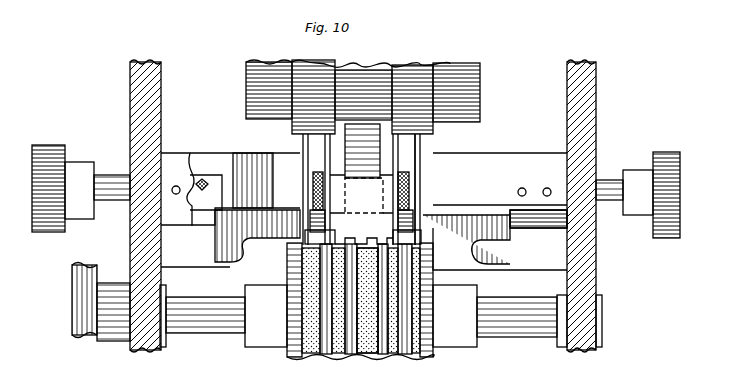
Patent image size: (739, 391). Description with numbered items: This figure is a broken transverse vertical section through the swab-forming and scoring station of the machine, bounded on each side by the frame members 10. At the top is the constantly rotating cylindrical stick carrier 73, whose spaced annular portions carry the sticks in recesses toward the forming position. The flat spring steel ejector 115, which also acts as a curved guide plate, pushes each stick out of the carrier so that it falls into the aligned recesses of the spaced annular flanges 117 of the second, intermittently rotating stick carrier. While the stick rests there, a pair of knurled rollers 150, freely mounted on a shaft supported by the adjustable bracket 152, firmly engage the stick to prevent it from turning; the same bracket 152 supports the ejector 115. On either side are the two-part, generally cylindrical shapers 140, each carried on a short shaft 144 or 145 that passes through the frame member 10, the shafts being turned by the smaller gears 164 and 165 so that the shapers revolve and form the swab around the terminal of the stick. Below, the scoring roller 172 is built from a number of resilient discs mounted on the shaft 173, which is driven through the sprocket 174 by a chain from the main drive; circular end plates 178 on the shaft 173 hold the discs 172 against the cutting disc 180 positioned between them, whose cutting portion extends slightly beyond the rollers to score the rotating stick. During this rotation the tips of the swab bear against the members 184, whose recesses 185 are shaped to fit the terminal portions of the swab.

The frame member 10 is at (162, 88).
The cylindrical stick carrier 73 is at (477, 66).
The ejector 115 is at (361, 151).
The annular flange 117 is at (421, 168).
The shaper 140 is at (181, 153).
The shaft 144 is at (612, 180).
The shaft 145 is at (103, 175).
The knurled roller 150 is at (318, 172).
The bracket 152 is at (363, 211).
The smaller gear 164 is at (670, 152).
The smaller gear 165 is at (45, 145).
The scoring roller 172 is at (398, 354).
The shaft 173 is at (531, 338).
The sprocket 174 is at (72, 326).
The circular end plate 178 is at (451, 348).
The cutting disc 180 is at (377, 352).
The member 184 is at (221, 258).
The recess 185 is at (278, 238).